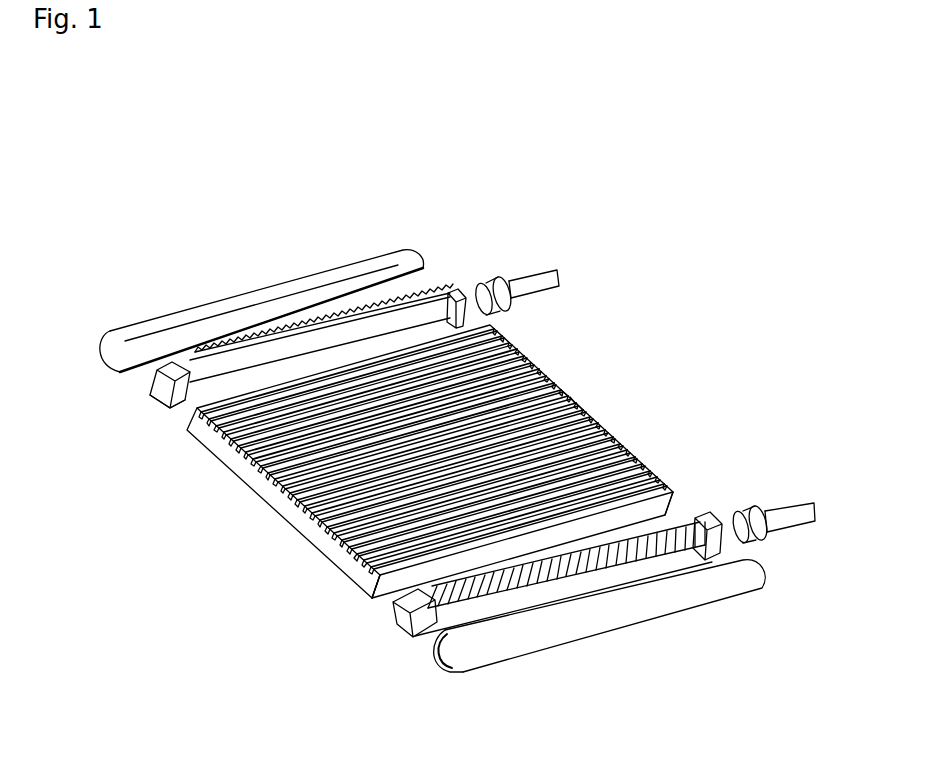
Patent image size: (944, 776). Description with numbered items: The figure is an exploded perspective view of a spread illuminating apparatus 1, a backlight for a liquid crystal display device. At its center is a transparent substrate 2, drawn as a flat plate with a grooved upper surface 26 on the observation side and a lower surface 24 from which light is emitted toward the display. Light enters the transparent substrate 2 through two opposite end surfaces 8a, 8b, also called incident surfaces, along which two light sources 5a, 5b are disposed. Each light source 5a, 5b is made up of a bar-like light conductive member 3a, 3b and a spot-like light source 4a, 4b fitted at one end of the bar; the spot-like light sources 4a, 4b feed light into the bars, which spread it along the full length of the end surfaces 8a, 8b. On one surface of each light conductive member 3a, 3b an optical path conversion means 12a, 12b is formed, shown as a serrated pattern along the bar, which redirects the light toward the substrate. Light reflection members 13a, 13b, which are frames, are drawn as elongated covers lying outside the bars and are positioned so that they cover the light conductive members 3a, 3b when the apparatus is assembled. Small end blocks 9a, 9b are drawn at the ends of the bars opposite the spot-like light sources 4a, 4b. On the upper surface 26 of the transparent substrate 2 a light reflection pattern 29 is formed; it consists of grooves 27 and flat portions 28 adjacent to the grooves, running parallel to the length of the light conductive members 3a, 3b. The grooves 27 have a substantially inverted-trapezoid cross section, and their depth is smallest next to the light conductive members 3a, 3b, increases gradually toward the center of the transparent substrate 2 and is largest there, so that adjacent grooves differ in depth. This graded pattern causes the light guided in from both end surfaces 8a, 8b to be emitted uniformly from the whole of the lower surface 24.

The spread illuminating apparatus 1 is at (424, 228).
The transparent substrate 2 is at (290, 517).
The lower surface 24 is at (325, 560).
The upper surface 26 is at (650, 467).
The grooves 27 is at (573, 408).
The flat portions 28 is at (587, 417).
The light reflection pattern 29 is at (733, 297).
The light reflection member 13a is at (257, 300).
The optical path conversion means 12a is at (310, 320).
The upper comb end block 9a is at (213, 387).
The end surface 8a is at (192, 414).
The light conductive member 3a is at (452, 295).
The spot-like light source 4a is at (513, 278).
The light source 5a is at (622, 177).
The optical path conversion means 12b is at (566, 595).
The lower comb end block 9b is at (436, 610).
The end surface 8b is at (380, 585).
The light conductive member 3b is at (698, 527).
The spot-like light source 4b is at (768, 515).
The light source 5b is at (855, 417).
The light reflection member 13b is at (682, 593).